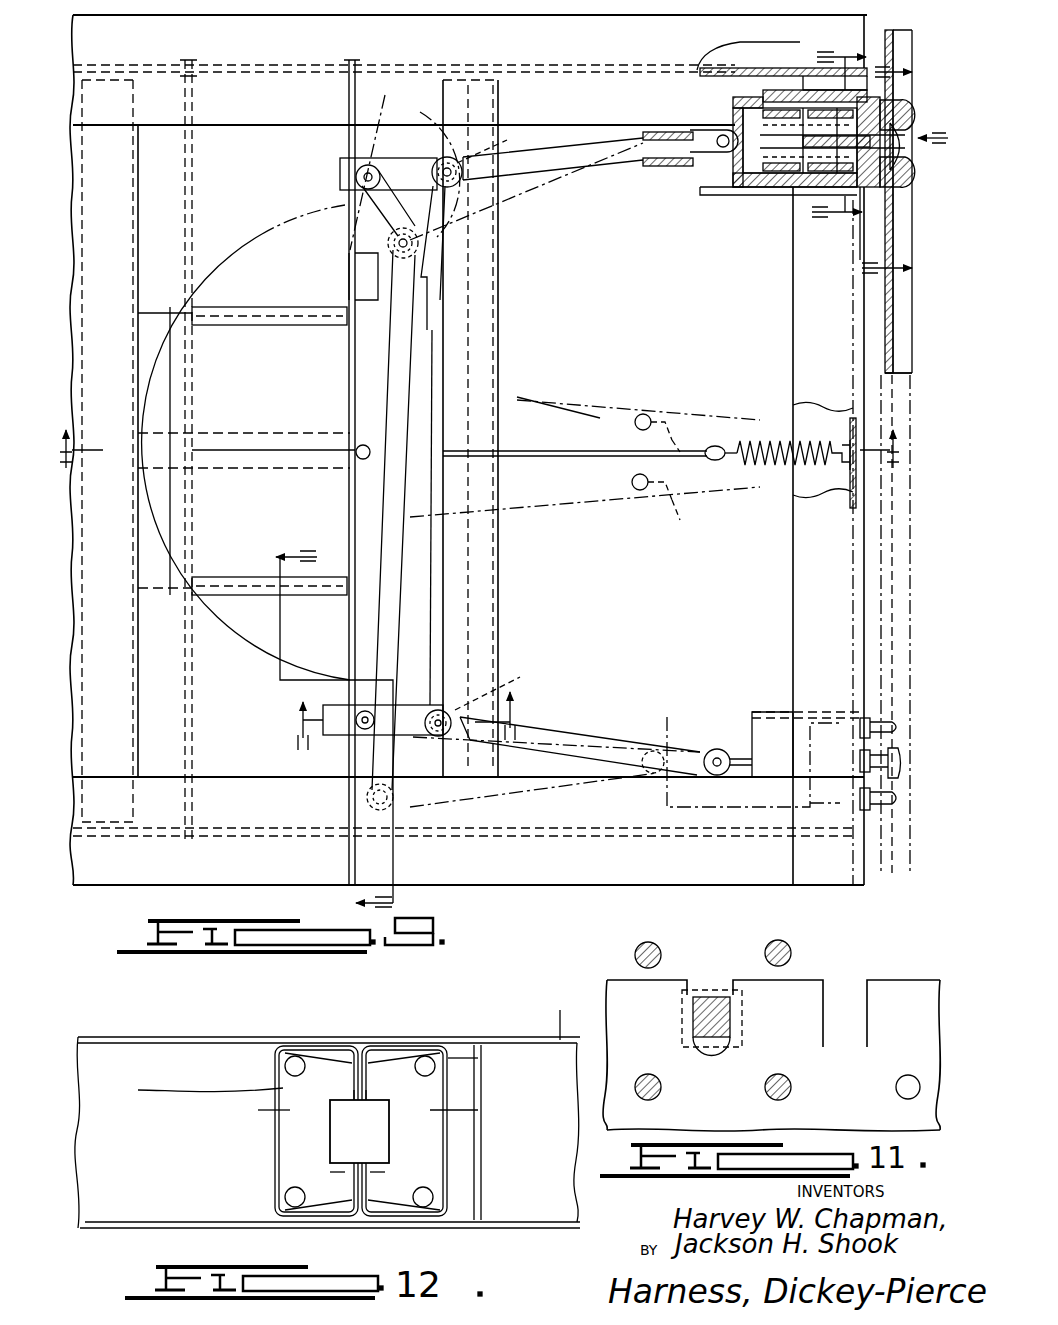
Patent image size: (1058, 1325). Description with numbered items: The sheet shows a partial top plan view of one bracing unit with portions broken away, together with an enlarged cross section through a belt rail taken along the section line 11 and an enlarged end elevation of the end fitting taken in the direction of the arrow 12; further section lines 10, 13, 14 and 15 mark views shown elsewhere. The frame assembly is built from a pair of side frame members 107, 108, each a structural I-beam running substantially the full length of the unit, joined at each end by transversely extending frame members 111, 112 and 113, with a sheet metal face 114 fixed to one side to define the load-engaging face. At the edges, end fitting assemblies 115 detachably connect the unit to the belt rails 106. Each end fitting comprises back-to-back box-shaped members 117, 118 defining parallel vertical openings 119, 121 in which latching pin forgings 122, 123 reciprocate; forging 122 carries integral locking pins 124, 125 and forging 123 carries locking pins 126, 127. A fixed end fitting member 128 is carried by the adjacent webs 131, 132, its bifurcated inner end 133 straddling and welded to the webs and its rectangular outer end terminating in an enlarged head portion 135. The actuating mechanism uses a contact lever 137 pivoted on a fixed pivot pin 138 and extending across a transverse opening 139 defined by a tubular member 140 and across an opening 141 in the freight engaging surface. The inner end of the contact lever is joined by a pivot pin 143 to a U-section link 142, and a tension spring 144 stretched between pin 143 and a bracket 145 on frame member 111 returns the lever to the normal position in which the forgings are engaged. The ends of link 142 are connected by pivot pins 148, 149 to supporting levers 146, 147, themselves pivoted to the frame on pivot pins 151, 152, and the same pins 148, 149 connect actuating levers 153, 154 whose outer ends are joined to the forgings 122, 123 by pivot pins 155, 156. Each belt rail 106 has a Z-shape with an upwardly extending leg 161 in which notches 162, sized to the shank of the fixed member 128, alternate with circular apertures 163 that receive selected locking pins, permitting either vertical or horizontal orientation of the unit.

In FIG. 9, the belt rail 106 is at (883, 348).
In FIG. 9, the side frame member 107 is at (242, 105).
In FIG. 9, the side frame member 108 is at (218, 790).
In FIG. 9, the transversely extending frame member 111 is at (793, 312).
In FIG. 12, the transversely extending frame member 111 is at (175, 1028).
In FIG. 9, the transversely extending frame member 112 is at (492, 243).
In FIG. 9, the transversely extending frame member 113 is at (120, 228).
In FIG. 12, the sheet metal face 114 is at (490, 1035).
In FIG. 9, the end fitting assembly 115 is at (760, 228).
In FIG. 12, the end fitting assembly 115 is at (255, 1162).
In FIG. 9, the box-shaped member 117 is at (778, 92).
In FIG. 12, the box-shaped member 117 is at (478, 1060).
In FIG. 9, the box-shaped member 118 is at (758, 258).
In FIG. 12, the box-shaped member 118 is at (272, 1070).
In FIG. 9, the vertically extending opening 119 is at (750, 112).
In FIG. 12, the vertically extending opening 119 is at (440, 1137).
In FIG. 9, the vertically extending opening 121 is at (808, 151).
In FIG. 12, the vertically extending opening 121 is at (282, 1093).
In FIG. 9, the latching pin forging 122 is at (830, 140).
In FIG. 12, the latching pin forging 122 is at (478, 1110).
In FIG. 9, the latching pin forging 123 is at (811, 228).
In FIG. 12, the latching pin forging 123 is at (258, 1110).
In FIG. 12, the locking pin 124 is at (428, 1060).
In FIG. 11, the locking pin 124 is at (805, 935).
In FIG. 12, the locking pin 125 is at (428, 1197).
In FIG. 11, the locking pin 125 is at (778, 1074).
In FIG. 12, the locking pin 126 is at (295, 1055).
In FIG. 11, the locking pin 126 is at (675, 935).
In FIG. 12, the locking pin 127 is at (285, 1195).
In FIG. 11, the locking pin 127 is at (660, 1080).
In FIG. 9, the fixed end fitting member 128 is at (902, 162).
In FIG. 12, the fixed end fitting member 128 is at (325, 1138).
In FIG. 11, the fixed end fitting member 128 is at (735, 1018).
In FIG. 9, the web 131 is at (785, 140).
In FIG. 12, the web 131 is at (370, 1172).
In FIG. 9, the web 132 is at (775, 190).
In FIG. 12, the web 132 is at (345, 1172).
In FIG. 9, the bifurcated inner end 133 is at (812, 45).
In FIG. 9, the enlarged head portion 135 is at (903, 186).
In FIG. 12, the enlarged head portion 135 is at (359, 1131).
In FIG. 9, the contact lever 137 is at (245, 440).
In FIG. 9, the fixed pivot pin 138 is at (356, 458).
In FIG. 9, the transversely extending opening 139 is at (212, 282).
In FIG. 9, the tubular member 140 is at (182, 62).
In FIG. 9, the opening 141 is at (284, 364).
In FIG. 9, the link 142 is at (436, 322).
In FIG. 9, the pivot pin 143 is at (445, 466).
In FIG. 9, the tension spring 144 is at (620, 450).
In FIG. 9, the bracket 145 is at (848, 475).
In FIG. 9, the supporting lever 146 is at (362, 165).
In FIG. 9, the supporting lever 147 is at (412, 760).
In FIG. 9, the pivot pin 148 is at (510, 138).
In FIG. 9, the pivot pin 149 is at (510, 685).
In FIG. 9, the pivot pin 151 is at (340, 185).
In FIG. 9, the pivot pin 152 is at (368, 745).
In FIG. 9, the actuating lever 153 is at (571, 166).
In FIG. 9, the actuating lever 154 is at (604, 740).
In FIG. 9, the pivot pin 155 is at (716, 170).
In FIG. 9, the pivot pin 156 is at (717, 750).
In FIG. 9, the upwardly extending leg 161 is at (887, 318).
In FIG. 12, the upwardly extending leg 161 is at (600, 1002).
In FIG. 9, the notch 162 is at (893, 230).
In FIG. 11, the notch 162 is at (592, 1013).
In FIG. 11, the circular aperture 163 is at (660, 1090).
In FIG. 9, the section line 10 is at (839, 138).
In FIG. 9, the section line 11 is at (912, 166).
In FIG. 9, the section line 12 is at (940, 119).
In FIG. 9, the section line 13 is at (505, 427).
In FIG. 9, the section line 14 is at (305, 725).
In FIG. 9, the section line 15 is at (406, 712).